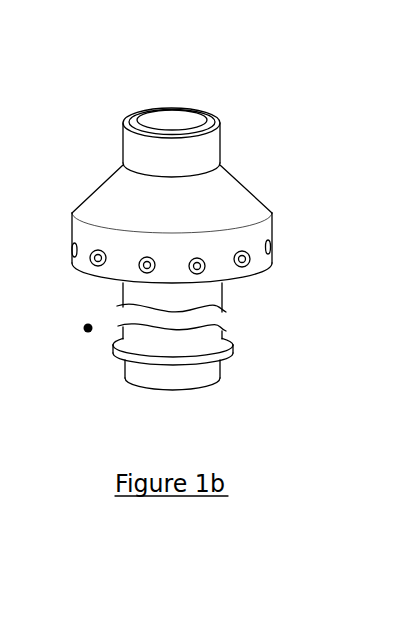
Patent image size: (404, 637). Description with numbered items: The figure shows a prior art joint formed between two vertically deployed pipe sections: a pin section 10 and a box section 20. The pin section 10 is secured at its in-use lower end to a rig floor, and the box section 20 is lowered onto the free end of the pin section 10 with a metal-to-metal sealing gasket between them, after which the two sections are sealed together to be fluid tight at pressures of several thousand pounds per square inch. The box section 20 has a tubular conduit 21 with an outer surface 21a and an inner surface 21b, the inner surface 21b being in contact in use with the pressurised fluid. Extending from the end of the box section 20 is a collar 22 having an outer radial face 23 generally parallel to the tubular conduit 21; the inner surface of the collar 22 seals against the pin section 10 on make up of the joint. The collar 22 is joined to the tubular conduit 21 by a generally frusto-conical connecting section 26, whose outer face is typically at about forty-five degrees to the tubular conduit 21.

The pin section 10 is at (221, 333).
The box section 20 is at (145, 150).
The tubular conduit 21 is at (186, 107).
The outer surface 21a is at (135, 163).
The inner surface 21b is at (203, 101).
The collar 22 is at (277, 225).
The outer radial face 23 is at (267, 267).
The connecting section 26 is at (146, 217).